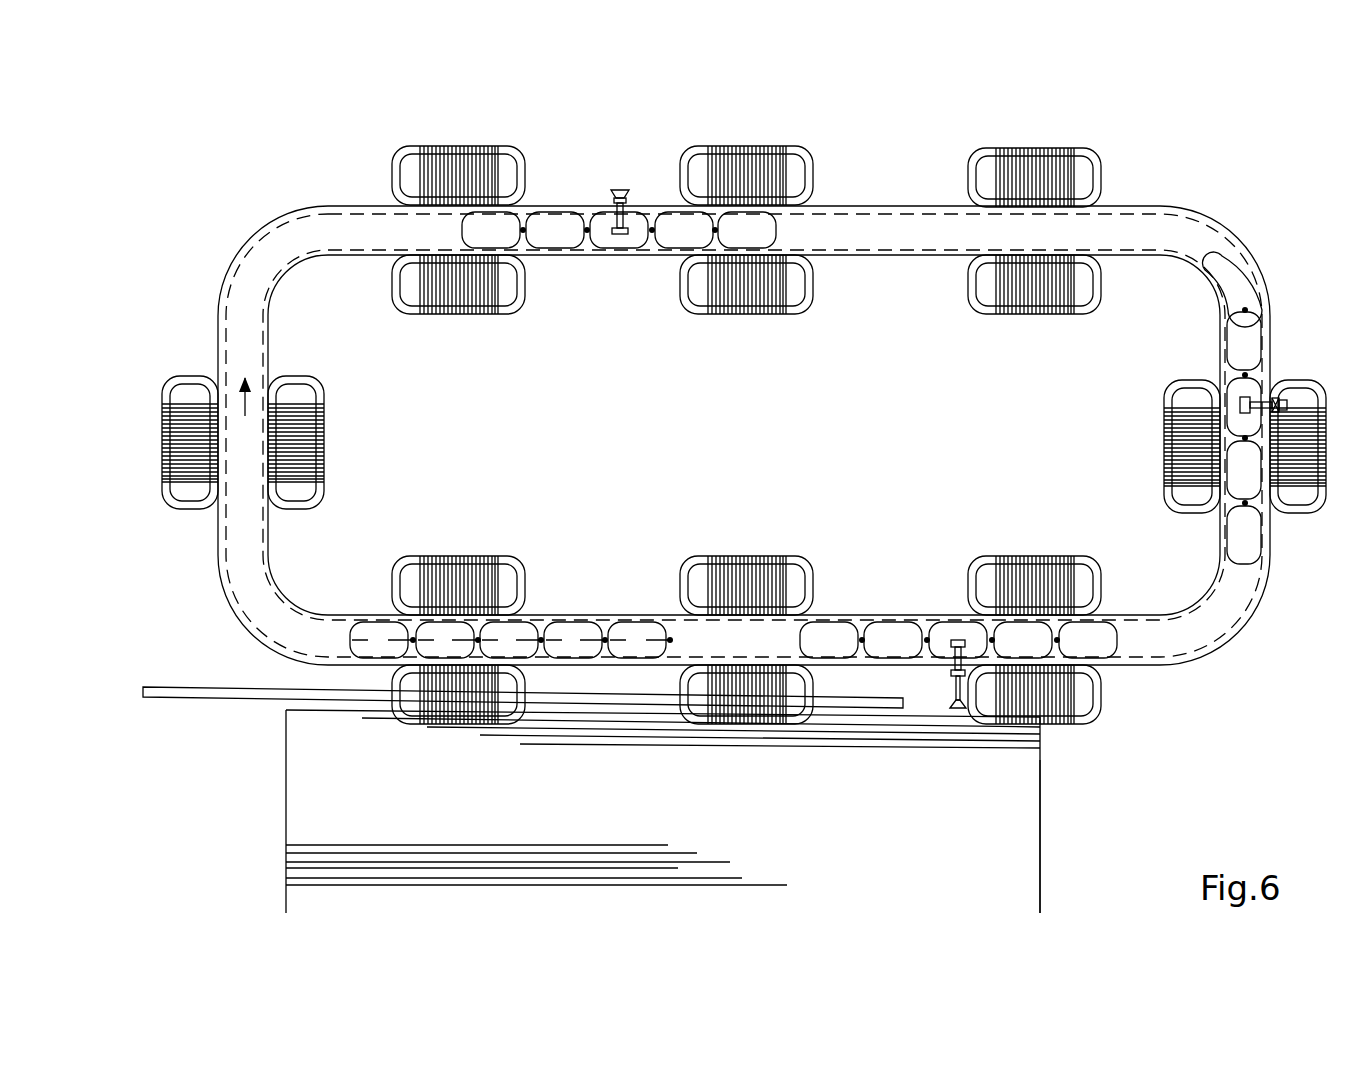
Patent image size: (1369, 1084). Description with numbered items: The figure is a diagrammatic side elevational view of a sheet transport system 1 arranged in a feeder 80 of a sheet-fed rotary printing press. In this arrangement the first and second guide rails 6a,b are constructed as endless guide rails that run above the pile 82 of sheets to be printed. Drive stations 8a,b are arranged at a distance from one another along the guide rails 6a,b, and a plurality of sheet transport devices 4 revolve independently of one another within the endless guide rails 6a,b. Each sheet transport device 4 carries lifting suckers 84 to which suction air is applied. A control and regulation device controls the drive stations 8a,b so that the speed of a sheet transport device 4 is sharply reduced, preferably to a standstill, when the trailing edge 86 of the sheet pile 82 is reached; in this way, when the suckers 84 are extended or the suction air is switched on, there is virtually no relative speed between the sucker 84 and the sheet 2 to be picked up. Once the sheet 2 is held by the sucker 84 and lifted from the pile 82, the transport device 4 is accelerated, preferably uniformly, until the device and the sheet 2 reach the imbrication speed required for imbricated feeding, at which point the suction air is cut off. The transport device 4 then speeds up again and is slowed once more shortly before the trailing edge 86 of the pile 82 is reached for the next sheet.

The sheet transport system 1 is at (243, 205).
The sheet 2 is at (183, 690).
The sheet transport device 4 is at (1232, 385).
The first and second guide rails 6a,b is at (361, 212).
The drive stations 8a,b is at (738, 571).
The feeder 80 is at (1179, 182).
The pile 82 is at (868, 838).
The lifting suckers 84 is at (1285, 404).
The trailing edge 86 is at (1040, 845).